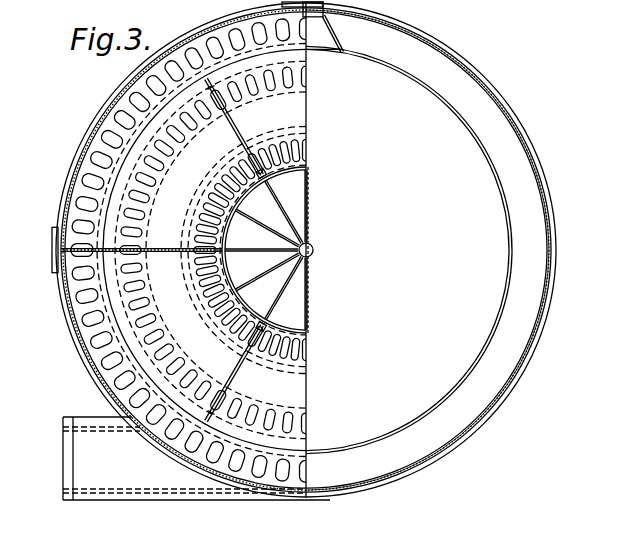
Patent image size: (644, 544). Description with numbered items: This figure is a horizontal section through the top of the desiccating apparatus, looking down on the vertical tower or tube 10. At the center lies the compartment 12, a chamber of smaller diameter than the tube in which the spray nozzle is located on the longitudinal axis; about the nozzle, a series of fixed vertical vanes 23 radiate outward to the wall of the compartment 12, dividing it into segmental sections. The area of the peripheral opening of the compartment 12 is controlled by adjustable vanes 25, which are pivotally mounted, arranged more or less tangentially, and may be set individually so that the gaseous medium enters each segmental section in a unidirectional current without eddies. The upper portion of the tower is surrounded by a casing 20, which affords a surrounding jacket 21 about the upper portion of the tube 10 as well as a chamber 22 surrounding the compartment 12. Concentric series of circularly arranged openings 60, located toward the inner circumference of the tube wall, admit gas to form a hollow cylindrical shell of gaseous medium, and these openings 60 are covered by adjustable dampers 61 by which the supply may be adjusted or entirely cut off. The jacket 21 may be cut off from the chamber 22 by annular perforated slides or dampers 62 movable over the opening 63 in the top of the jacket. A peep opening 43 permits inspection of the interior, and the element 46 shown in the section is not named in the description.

The vertical tower or tube 10 is at (340, 249).
The compartment 12 is at (317, 250).
The casing 20 is at (295, 250).
The jacket 21 is at (221, 53).
The chamber 22 is at (170, 250).
The fixed vertical vanes 23 is at (281, 250).
The adjustable vanes 25 is at (267, 250).
The peep opening 43 is at (181, 138).
The feed chute 46 is at (116, 500).
The openings 60 is at (245, 249).
The adjustable dampers 61 is at (207, 244).
The annular perforated slides or dampers 62 is at (182, 241).
The opening 63 is at (310, 250).